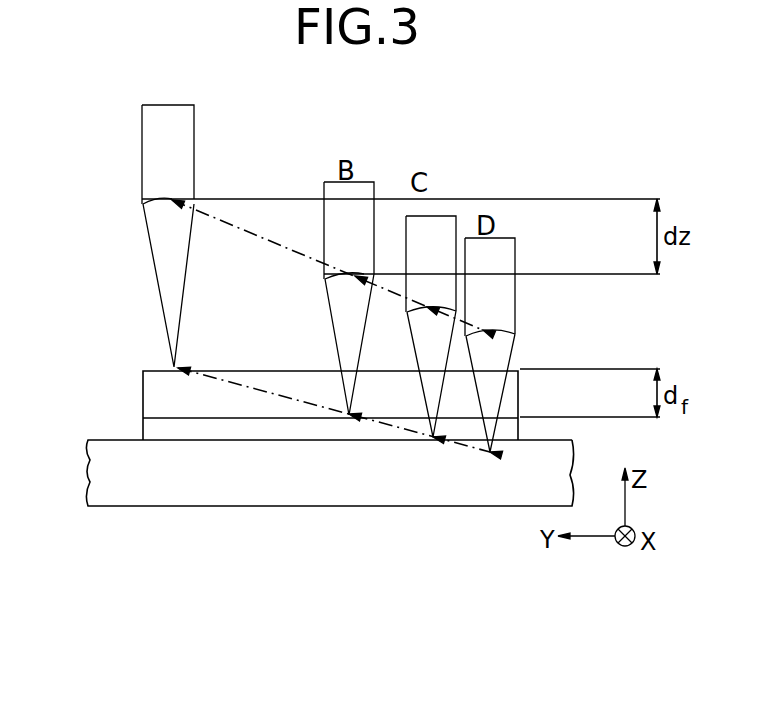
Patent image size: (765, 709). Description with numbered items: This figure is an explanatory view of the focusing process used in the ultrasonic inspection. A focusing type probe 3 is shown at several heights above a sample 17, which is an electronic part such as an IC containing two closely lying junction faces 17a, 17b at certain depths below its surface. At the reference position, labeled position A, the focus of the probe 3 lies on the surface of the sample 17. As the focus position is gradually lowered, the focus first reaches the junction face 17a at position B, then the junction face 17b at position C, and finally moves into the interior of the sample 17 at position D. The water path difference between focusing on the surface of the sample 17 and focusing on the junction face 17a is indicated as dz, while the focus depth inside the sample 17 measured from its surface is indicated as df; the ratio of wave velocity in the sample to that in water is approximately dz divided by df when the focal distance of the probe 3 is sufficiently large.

The focusing type probe 3 is at (194, 105).
The sample 17 is at (156, 370).
The junction face 17a is at (143, 418).
The junction face 17b is at (175, 441).